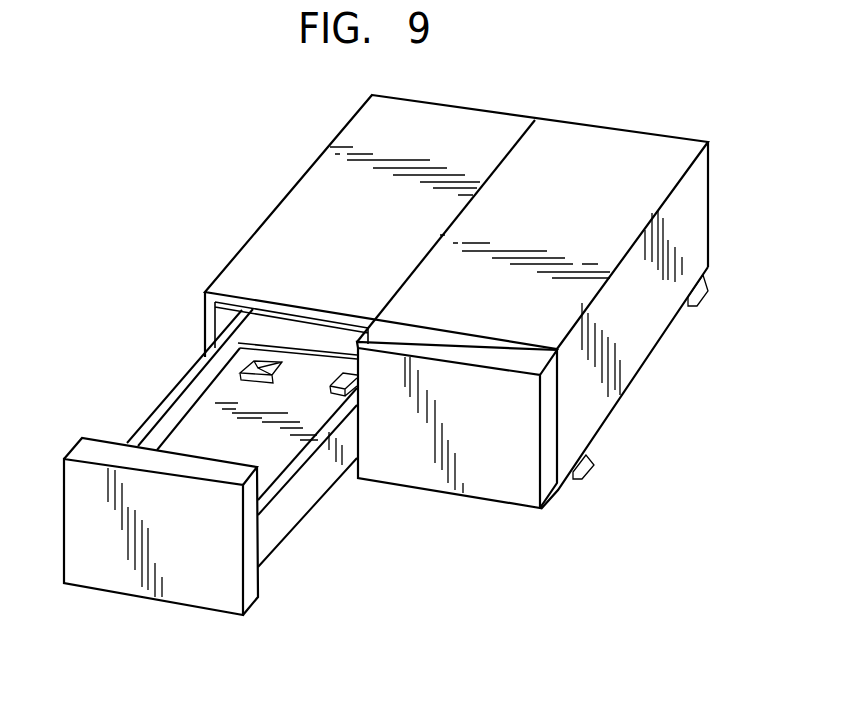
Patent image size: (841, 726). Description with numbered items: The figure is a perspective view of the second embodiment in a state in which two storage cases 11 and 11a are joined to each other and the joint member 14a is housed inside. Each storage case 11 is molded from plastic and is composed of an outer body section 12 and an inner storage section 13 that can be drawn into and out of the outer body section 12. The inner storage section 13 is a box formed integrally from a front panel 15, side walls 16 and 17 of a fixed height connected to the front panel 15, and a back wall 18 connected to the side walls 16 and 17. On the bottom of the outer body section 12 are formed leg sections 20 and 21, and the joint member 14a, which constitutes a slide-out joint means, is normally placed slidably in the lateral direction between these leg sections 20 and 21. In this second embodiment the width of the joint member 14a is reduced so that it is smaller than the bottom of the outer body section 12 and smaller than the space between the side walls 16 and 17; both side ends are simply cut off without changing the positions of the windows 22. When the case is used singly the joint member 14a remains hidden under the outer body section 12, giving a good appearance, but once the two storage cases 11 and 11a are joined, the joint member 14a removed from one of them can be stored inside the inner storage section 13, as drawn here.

The storage case 11 is at (290, 157).
The storage case 11a is at (655, 376).
The outer body section 12 is at (277, 246).
The inner storage section 13 is at (163, 383).
The joint member 14a is at (274, 461).
The front panel 15 is at (192, 583).
The side wall 16 is at (280, 513).
The side wall 17 is at (138, 440).
The back wall 18 is at (278, 327).
The leg section 20 is at (594, 460).
The leg section 21 is at (706, 284).
The window 22 is at (250, 362).